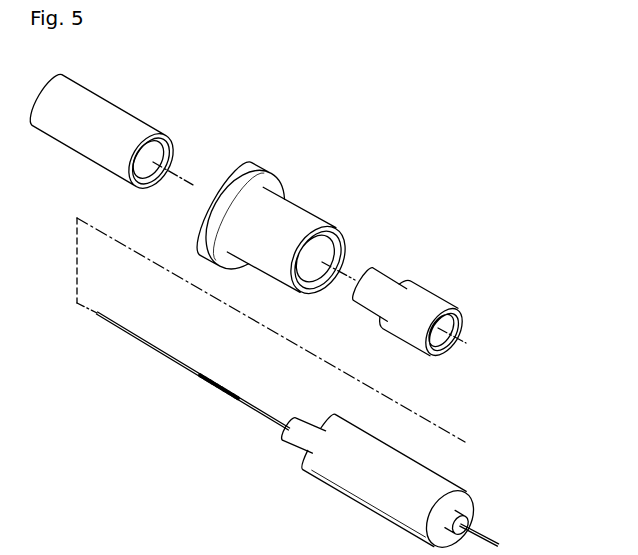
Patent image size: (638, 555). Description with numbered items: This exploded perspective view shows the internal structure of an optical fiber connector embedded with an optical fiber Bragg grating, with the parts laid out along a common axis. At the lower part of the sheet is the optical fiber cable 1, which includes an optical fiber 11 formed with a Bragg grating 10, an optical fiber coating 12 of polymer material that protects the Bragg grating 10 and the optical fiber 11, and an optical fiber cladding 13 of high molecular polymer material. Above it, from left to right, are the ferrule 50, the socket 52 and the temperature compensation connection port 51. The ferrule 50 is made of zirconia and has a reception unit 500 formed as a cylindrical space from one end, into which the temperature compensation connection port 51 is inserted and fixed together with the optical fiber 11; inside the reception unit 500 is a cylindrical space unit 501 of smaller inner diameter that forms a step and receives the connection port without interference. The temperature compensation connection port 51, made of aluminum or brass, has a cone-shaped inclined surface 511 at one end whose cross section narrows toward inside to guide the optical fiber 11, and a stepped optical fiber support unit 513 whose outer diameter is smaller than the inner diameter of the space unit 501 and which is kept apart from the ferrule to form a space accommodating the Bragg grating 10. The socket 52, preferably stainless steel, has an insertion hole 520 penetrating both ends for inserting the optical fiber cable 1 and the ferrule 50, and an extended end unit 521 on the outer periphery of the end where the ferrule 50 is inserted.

The optical fiber cable 1 is at (297, 429).
The Bragg grating 10 is at (223, 393).
The optical fiber 11 is at (162, 357).
The optical fiber coating 12 is at (293, 448).
The optical fiber cladding 13 is at (360, 502).
The ferrule 50 is at (130, 113).
The reception unit 500 is at (170, 158).
The space unit 501 is at (160, 147).
The temperature compensation connection port 51 is at (441, 293).
The cone-shaped inclined surface 511 is at (460, 330).
The optical fiber support unit 513 is at (401, 276).
The socket 52 is at (265, 206).
The insertion hole 520 is at (332, 242).
The extended end unit 521 is at (203, 235).